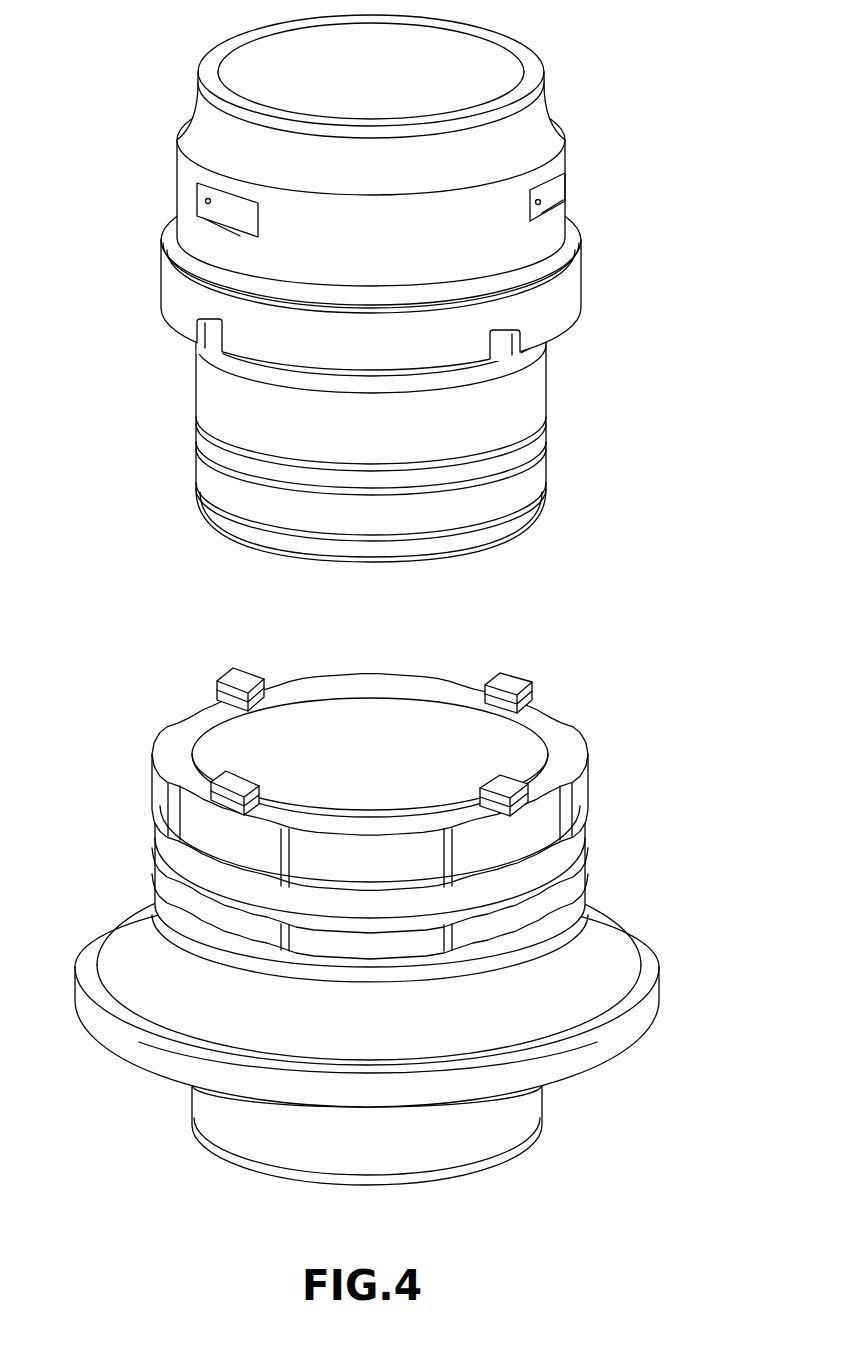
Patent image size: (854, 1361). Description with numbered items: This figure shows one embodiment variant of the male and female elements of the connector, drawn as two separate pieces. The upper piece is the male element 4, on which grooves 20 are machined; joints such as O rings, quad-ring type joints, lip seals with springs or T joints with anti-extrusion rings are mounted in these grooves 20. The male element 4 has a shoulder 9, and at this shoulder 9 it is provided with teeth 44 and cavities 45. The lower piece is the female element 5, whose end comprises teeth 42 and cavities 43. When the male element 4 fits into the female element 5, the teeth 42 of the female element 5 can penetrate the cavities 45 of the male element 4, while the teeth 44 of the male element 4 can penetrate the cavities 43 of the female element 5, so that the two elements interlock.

The male element 4 is at (570, 147).
The female element 5 is at (520, 1122).
The shoulder 9 is at (363, 372).
The grooves 20 is at (545, 420).
The teeth 42 is at (232, 674).
The cavities 43 is at (173, 741).
The teeth 44 is at (168, 326).
The cavities 45 is at (197, 335).